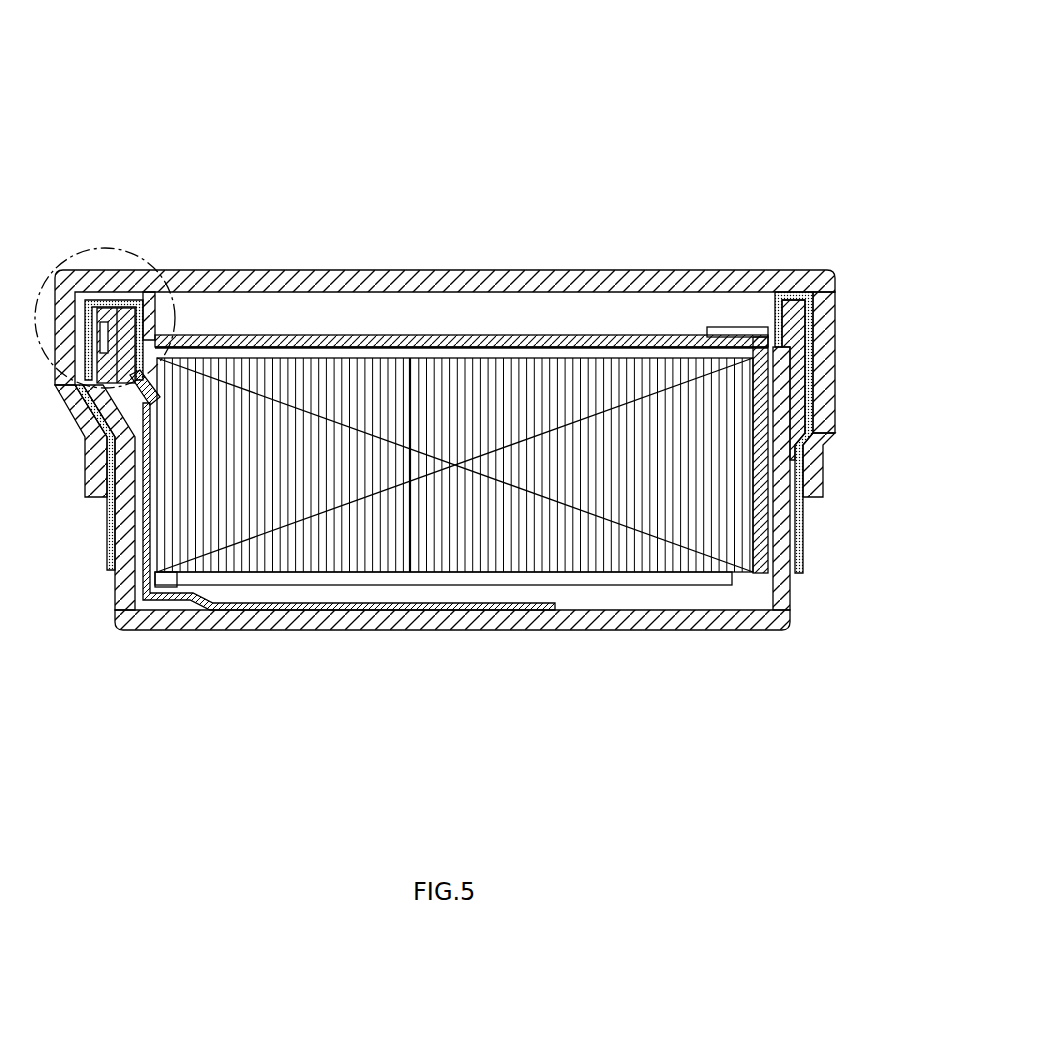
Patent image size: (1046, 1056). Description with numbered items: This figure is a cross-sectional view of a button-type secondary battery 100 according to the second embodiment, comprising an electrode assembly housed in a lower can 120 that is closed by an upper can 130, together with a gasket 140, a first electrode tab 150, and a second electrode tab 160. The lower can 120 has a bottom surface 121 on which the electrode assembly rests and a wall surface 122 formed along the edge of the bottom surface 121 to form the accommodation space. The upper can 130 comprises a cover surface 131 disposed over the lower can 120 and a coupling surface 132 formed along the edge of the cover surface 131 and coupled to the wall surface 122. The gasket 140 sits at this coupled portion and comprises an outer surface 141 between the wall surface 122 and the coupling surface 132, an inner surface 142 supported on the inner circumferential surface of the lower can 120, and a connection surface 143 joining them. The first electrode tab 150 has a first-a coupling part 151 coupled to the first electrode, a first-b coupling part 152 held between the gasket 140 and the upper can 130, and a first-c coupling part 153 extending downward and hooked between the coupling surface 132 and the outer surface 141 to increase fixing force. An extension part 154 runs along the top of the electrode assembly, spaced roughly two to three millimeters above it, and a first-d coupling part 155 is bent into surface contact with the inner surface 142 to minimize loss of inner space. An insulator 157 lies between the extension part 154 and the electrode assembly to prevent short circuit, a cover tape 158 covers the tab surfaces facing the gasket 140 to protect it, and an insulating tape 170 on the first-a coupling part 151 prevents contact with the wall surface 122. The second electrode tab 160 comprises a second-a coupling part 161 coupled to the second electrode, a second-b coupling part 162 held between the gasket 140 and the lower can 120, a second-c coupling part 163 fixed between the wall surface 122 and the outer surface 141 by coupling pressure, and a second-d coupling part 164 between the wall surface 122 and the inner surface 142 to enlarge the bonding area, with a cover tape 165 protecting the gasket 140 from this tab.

The secondary battery 100 is at (146, 156).
The lower can 120 is at (810, 704).
The bottom surface 121 is at (737, 632).
The wall surface 122 is at (808, 598).
The upper can 130 is at (848, 201).
The cover surface 131 is at (773, 273).
The coupling surface 132 is at (827, 322).
The gasket 140 is at (885, 335).
The outer surface 141 is at (823, 395).
The inner surface 142 is at (778, 345).
The connection surface 143 is at (790, 297).
The first electrode tab 150 is at (738, 8).
The first-a coupling part 151 is at (757, 397).
The first-b coupling part 152 is at (116, 293).
The first-c coupling part 153 is at (70, 290).
The extension part 154 is at (272, 340).
The first-d coupling part 155 is at (160, 307).
The insulator 157 is at (410, 353).
The cover tape 158 is at (475, 345).
The second electrode tab 160 is at (862, 20).
The second-a coupling part 161 is at (375, 612).
The second-b coupling part 162 is at (104, 388).
The second-c coupling part 163 is at (95, 343).
The second-d coupling part 164 is at (76, 420).
The cover tape 165 is at (83, 440).
The insulating tape 170 is at (770, 470).